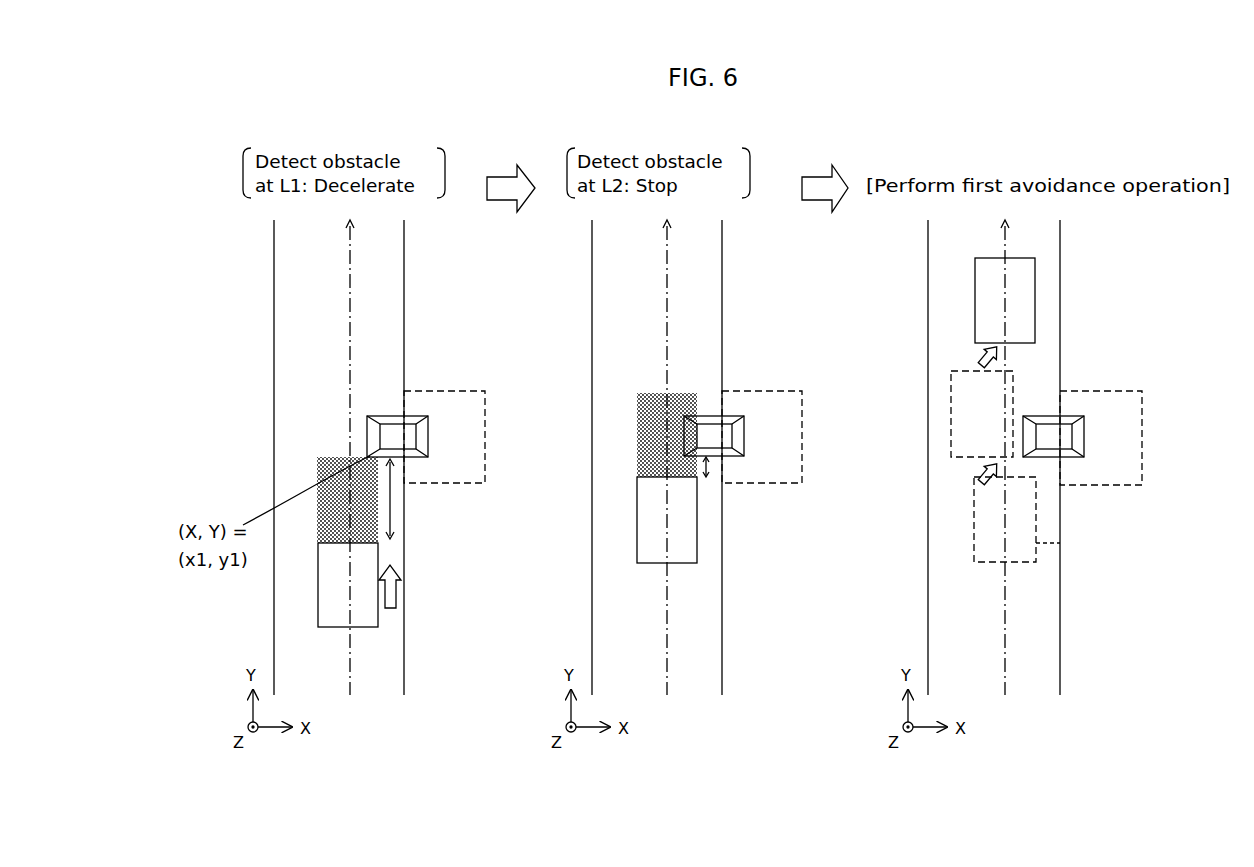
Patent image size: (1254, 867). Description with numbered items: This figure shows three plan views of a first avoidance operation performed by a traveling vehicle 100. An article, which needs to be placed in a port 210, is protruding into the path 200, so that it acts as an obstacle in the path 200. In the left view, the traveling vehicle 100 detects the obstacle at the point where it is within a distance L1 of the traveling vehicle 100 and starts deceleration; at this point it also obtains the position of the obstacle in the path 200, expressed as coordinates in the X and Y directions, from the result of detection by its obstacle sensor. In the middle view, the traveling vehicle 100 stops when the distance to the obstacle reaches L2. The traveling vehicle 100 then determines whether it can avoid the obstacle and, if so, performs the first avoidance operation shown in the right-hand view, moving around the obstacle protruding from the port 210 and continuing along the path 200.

The traveling vehicle 100 is at (333, 629).
The path 200 is at (367, 327).
The port 210 is at (457, 390).
The distance L1 is at (391, 507).
The distance L2 is at (708, 468).